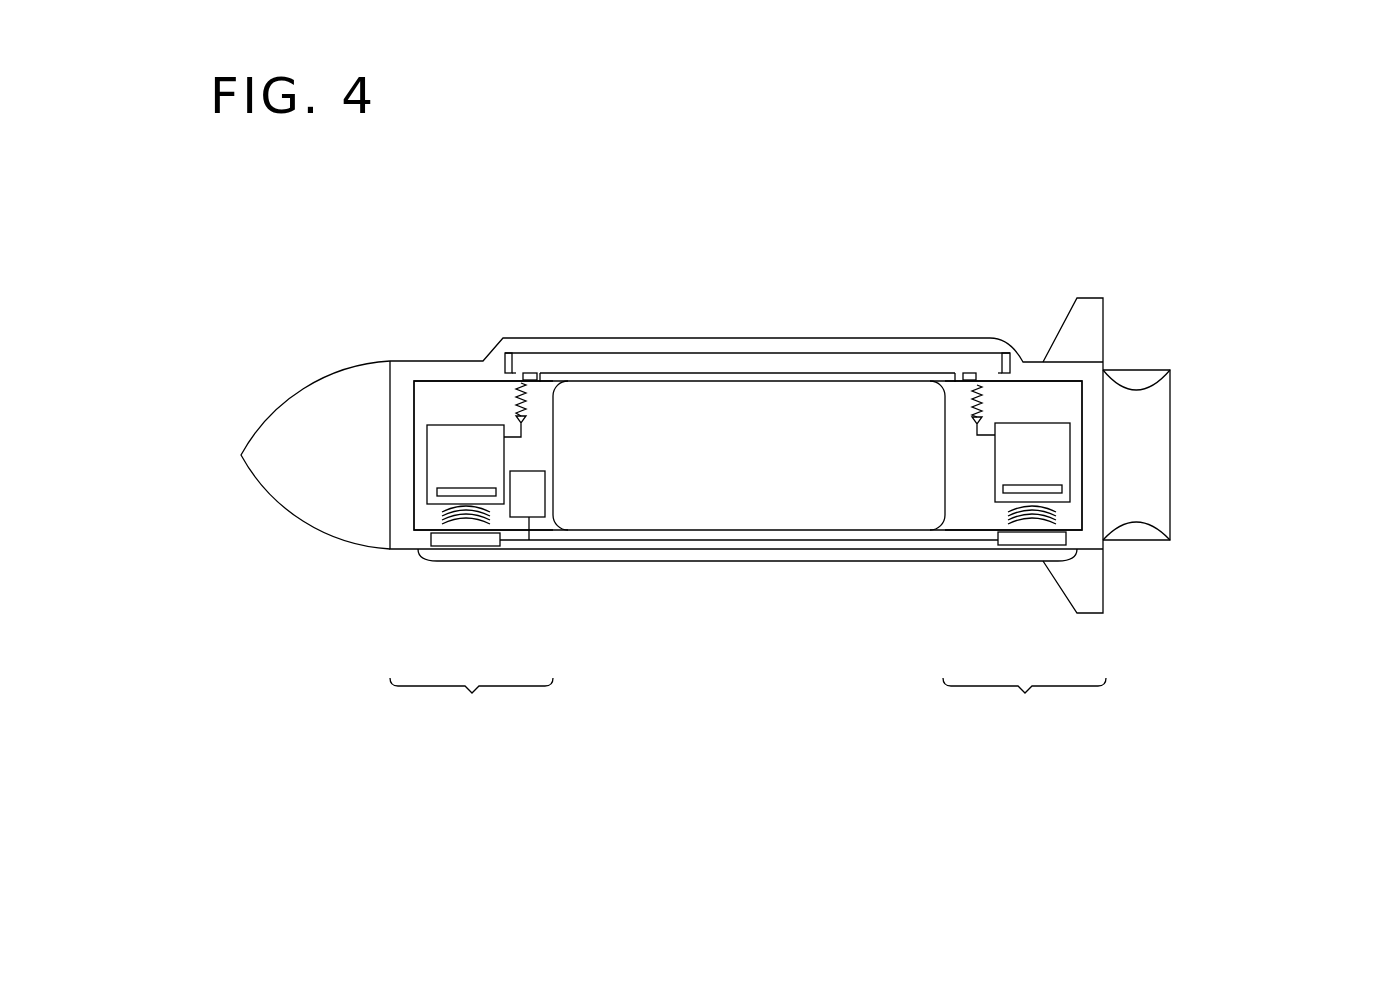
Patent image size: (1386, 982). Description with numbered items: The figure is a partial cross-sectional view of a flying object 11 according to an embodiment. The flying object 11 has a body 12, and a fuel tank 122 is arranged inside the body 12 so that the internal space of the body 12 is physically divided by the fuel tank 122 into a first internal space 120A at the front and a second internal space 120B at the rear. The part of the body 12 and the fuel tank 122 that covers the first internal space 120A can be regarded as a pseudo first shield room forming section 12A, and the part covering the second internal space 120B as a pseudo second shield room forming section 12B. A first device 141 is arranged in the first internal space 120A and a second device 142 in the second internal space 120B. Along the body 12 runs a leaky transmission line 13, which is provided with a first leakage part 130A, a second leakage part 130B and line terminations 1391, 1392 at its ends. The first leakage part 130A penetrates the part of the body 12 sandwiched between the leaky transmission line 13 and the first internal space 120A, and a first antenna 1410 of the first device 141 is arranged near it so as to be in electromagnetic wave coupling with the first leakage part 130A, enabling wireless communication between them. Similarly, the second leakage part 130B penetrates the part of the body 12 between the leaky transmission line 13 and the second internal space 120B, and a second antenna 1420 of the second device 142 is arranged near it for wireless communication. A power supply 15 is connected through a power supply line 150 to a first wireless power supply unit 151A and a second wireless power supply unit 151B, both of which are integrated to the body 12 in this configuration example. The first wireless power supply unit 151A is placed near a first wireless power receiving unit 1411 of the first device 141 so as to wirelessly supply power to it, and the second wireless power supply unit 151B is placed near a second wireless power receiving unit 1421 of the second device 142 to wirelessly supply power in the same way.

The flying object 11 is at (903, 252).
The body 12 is at (810, 338).
The first shield room forming section 12A is at (473, 552).
The second shield room forming section 12B is at (1023, 552).
The leaky transmission line 13 is at (700, 360).
The power supply 15 is at (527, 494).
The first internal space 120A is at (418, 422).
The second internal space 120B is at (1067, 397).
The fuel tank 122 is at (749, 455).
The first leakage part 130A is at (545, 373).
The second leakage part 130B is at (955, 377).
The first device 141 is at (438, 430).
The second device 142 is at (1063, 453).
The power supply line 150 is at (738, 538).
The first wireless power supply unit 151A is at (466, 545).
The second wireless power supply unit 151B is at (1007, 547).
The line termination 1391 is at (510, 353).
The line termination 1392 is at (1050, 288).
The first antenna 1410 is at (522, 437).
The first wireless power receiving unit 1411 is at (437, 490).
The second antenna 1420 is at (977, 435).
The second wireless power receiving unit 1421 is at (1062, 490).